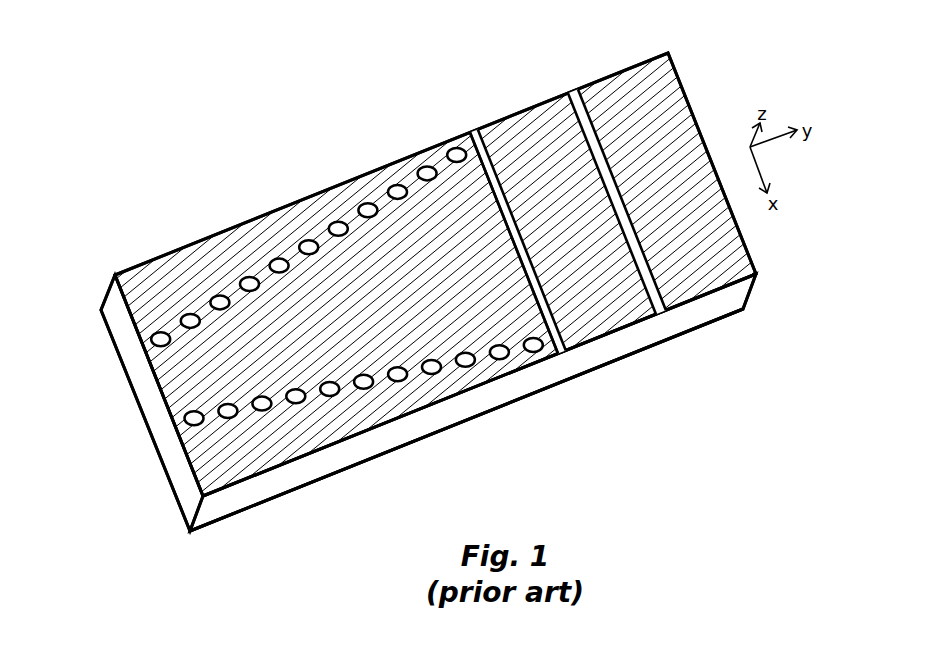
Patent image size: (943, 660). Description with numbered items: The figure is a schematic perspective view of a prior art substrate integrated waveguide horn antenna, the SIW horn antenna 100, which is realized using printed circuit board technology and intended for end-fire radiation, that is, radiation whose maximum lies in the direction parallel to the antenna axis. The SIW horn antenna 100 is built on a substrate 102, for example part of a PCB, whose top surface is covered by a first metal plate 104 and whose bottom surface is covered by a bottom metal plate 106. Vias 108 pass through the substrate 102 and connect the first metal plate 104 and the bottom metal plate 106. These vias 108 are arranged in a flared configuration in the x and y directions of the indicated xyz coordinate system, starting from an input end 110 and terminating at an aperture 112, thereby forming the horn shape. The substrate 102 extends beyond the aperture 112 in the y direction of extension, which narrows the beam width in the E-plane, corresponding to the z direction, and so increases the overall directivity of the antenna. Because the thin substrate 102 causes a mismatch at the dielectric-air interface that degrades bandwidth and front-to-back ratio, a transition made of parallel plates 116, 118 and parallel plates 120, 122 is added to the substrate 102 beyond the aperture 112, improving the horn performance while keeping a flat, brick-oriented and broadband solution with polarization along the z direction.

The SIW horn antenna 100 is at (235, 167).
The substrate 102 is at (112, 318).
The first metal plate 104 is at (187, 254).
The bottom metal plate 106 is at (263, 502).
The vias 108 is at (366, 206).
The input end 110 is at (157, 388).
The aperture 112 is at (518, 253).
The parallel plate 116 is at (513, 123).
The parallel plate 118 is at (635, 355).
The parallel plate 120 is at (611, 83).
The parallel plate 122 is at (700, 328).